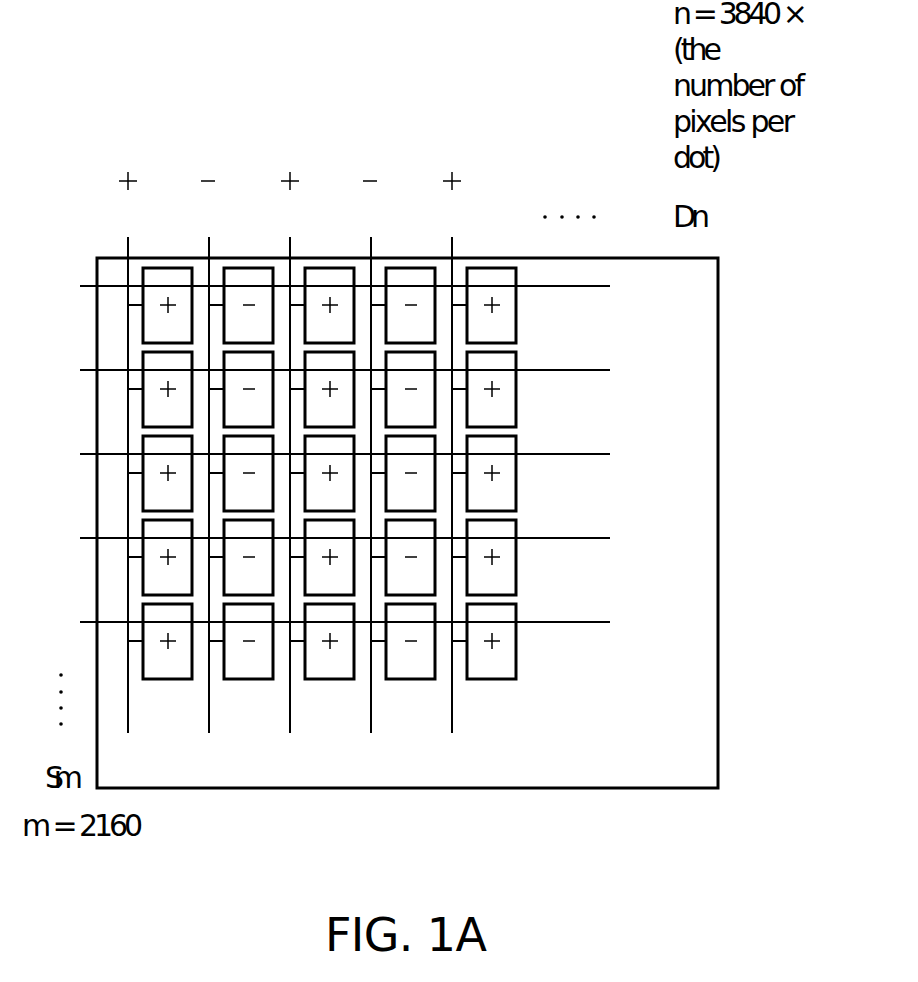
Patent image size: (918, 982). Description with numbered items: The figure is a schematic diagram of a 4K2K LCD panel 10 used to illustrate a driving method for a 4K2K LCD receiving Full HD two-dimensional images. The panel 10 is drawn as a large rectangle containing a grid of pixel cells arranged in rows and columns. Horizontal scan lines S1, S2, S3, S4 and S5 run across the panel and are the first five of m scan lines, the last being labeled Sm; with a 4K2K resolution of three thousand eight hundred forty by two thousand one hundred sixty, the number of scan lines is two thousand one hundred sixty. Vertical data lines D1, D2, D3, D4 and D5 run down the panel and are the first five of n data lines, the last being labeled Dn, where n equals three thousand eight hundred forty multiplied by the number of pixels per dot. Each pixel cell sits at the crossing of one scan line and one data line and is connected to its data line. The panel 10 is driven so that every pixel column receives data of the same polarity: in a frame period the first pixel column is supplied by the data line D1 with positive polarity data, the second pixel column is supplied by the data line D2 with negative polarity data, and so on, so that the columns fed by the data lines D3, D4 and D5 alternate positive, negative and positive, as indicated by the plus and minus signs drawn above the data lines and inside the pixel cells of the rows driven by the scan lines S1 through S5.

The 4K2K LCD panel 10 is at (718, 522).
The data line D1 is at (127, 466).
The data line D2 is at (208, 466).
The data line D3 is at (289, 466).
The data line D4 is at (370, 466).
The data line D5 is at (451, 466).
The scan line S1 is at (327, 285).
The scan line S2 is at (327, 369).
The scan line S3 is at (327, 453).
The scan line S4 is at (327, 537).
The scan line S5 is at (327, 621).